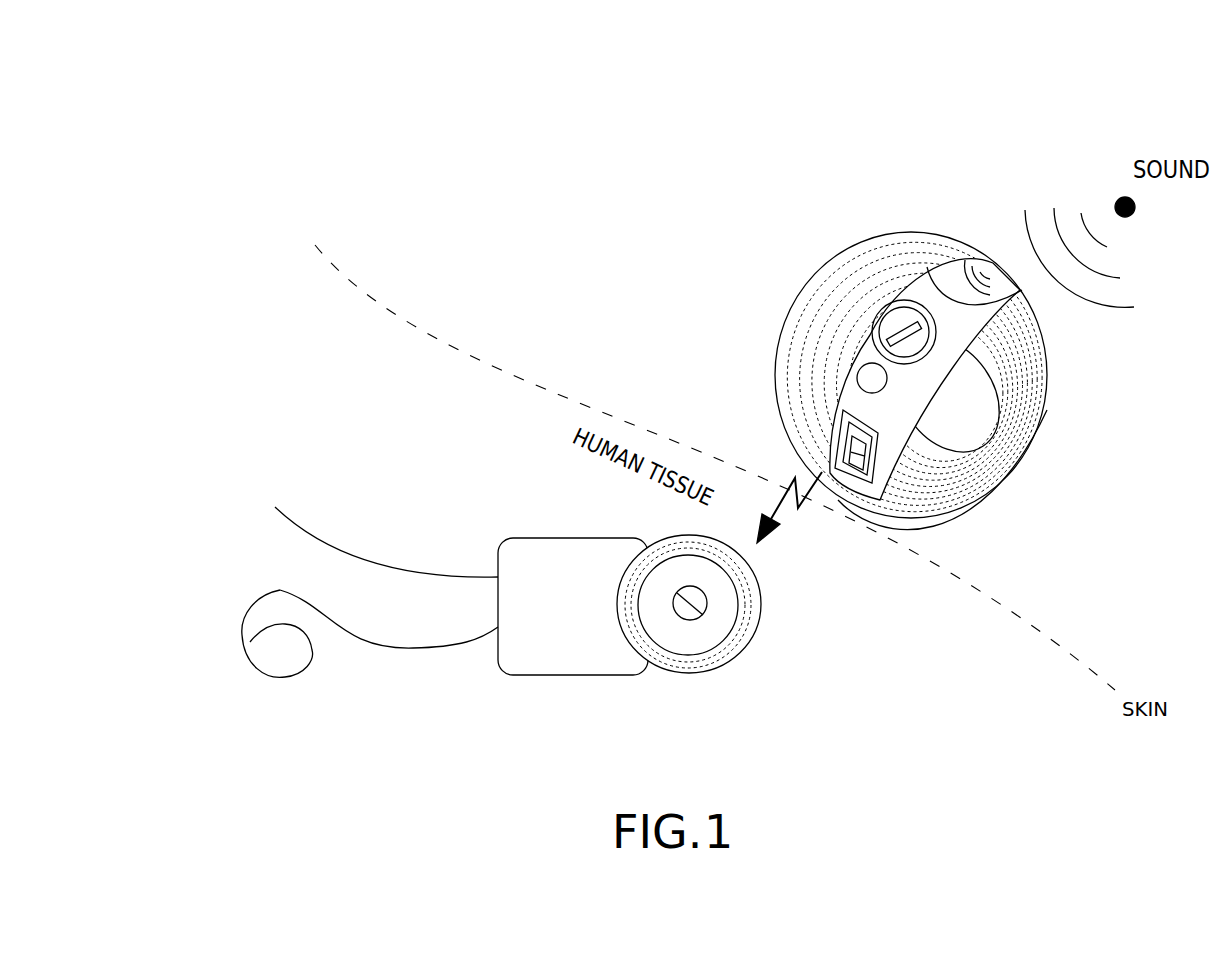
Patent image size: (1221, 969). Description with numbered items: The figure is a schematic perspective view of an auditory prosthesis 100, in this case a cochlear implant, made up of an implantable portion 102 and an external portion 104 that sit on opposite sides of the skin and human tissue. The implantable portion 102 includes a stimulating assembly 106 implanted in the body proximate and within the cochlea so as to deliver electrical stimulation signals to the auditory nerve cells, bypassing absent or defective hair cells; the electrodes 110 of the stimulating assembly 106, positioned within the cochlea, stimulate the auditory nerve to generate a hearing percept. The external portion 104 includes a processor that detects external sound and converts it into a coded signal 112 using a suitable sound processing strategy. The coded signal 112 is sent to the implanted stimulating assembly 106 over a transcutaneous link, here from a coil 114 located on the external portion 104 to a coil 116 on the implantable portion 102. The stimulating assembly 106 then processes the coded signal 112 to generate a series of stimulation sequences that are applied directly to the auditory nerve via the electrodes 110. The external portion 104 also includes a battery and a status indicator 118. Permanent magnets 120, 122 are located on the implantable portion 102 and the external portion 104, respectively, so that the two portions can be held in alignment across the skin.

The auditory prosthesis 100 is at (613, 228).
The implantable portion 102 is at (521, 754).
The external portion 104 is at (997, 131).
The stimulating assembly 106 is at (602, 660).
The electrodes 110 is at (292, 518).
The coded signal 112 is at (772, 528).
The coil 114 is at (1007, 430).
The coil 116 is at (741, 632).
The battery and status indicator 118 is at (853, 468).
The permanent magnet 120 is at (697, 620).
The permanent magnet 122 is at (843, 350).